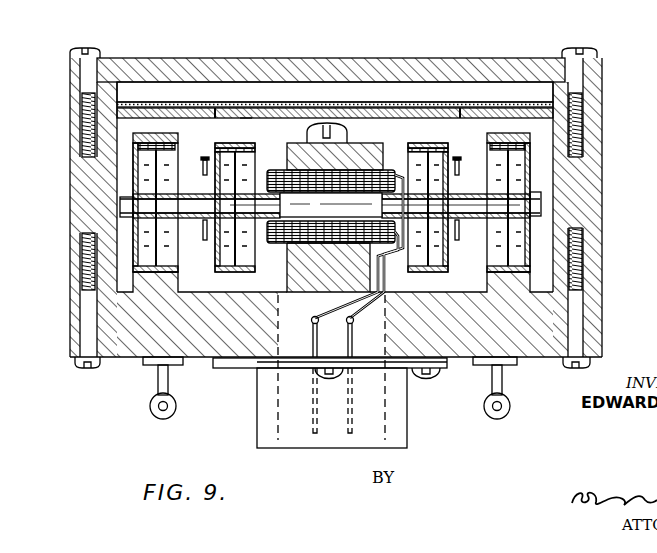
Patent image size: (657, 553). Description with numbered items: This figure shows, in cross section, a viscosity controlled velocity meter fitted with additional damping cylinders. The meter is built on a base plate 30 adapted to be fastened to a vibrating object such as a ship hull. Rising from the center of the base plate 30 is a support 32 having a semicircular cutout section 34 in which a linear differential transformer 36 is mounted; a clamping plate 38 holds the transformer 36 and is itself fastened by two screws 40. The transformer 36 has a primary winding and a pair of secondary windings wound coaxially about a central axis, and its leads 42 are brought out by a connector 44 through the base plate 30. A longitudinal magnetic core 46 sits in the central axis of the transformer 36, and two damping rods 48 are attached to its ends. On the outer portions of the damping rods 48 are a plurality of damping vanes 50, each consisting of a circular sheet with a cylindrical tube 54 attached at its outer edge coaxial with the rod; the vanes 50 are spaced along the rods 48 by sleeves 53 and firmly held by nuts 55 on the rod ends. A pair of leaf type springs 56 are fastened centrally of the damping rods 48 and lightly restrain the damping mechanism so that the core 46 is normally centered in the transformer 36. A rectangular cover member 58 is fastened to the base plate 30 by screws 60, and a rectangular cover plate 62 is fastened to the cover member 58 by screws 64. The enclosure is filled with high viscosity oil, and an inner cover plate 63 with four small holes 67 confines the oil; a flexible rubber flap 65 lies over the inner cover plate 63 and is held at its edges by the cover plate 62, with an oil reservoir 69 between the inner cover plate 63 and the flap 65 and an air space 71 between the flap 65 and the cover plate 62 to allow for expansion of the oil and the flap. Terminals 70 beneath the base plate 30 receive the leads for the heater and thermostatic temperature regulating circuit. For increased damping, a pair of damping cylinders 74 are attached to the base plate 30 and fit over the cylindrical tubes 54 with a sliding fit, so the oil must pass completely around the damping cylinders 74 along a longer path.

The base plate 30 is at (167, 343).
The support 32 is at (296, 276).
The semicircular cutout section 34 is at (287, 247).
The linear differential transformer 36 is at (280, 170).
The clamping plate 38 is at (333, 177).
The screws 40 is at (338, 124).
The leads 42 is at (378, 278).
The connector 44 is at (263, 398).
The magnetic core 46 is at (363, 200).
The damping rods 48 is at (200, 214).
The damping vanes 50 is at (215, 258).
The sleeves 53 is at (172, 177).
The cylindrical tube 54 is at (146, 153).
The nuts 55 is at (120, 205).
The leaf type springs 56 is at (206, 182).
The rectangular cover member 58 is at (77, 213).
The screws 60 is at (80, 318).
The rectangular cover plate 62 is at (432, 63).
The inner cover plate 63 is at (245, 117).
The screws 64 is at (85, 74).
The rectangular flap 65 is at (278, 103).
The holes 67 is at (215, 115).
The oil reservoir 69 is at (265, 103).
The terminals 70 is at (152, 414).
The air space 71 is at (318, 92).
The damping cylinders 74 is at (162, 133).